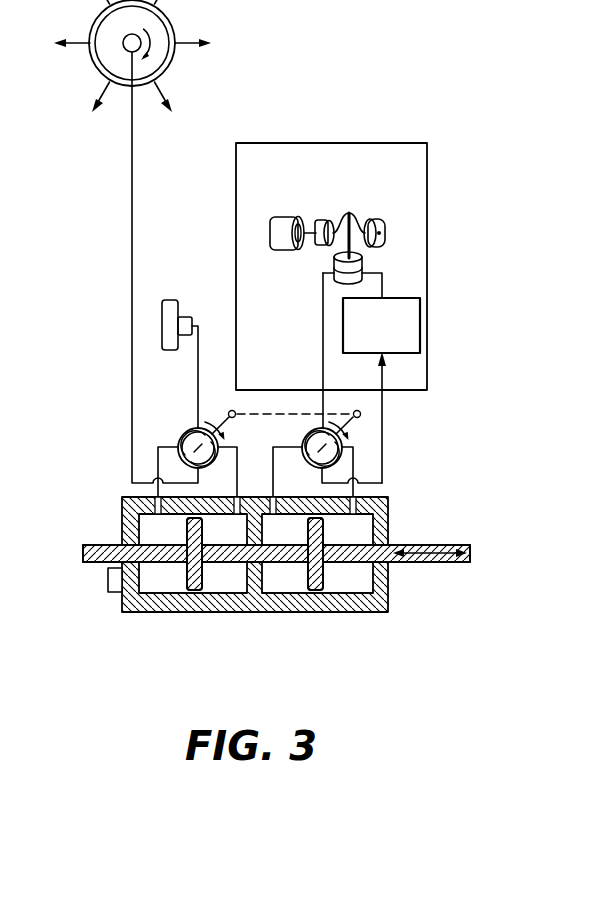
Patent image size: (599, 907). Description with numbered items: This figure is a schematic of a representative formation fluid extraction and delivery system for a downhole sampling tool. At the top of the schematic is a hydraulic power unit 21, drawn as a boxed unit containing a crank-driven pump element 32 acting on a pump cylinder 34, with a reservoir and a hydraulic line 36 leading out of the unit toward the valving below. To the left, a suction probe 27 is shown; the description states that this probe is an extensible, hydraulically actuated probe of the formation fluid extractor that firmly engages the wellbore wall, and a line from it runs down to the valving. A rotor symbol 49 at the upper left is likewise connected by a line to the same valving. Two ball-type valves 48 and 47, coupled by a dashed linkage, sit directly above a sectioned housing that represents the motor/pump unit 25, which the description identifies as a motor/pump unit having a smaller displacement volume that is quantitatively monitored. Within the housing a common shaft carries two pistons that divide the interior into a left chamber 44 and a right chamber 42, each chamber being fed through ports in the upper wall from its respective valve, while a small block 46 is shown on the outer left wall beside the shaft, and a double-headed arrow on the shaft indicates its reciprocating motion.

The hydraulic power unit 21 is at (331, 297).
The motor/pump unit 25 is at (258, 588).
The suction probe 27 is at (173, 300).
The crankshaft motor 32 is at (288, 215).
The pump cylinder 34 is at (327, 267).
The hydraulic line 36 is at (322, 344).
The right chamber 42 is at (350, 585).
The left chamber 44 is at (225, 585).
The shaft seal block 46 is at (107, 582).
The control valve 47 is at (303, 443).
The control valve 48 is at (180, 435).
The fan rotor 49 is at (166, 63).